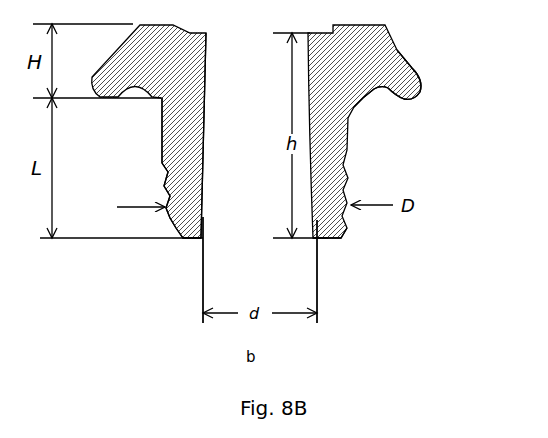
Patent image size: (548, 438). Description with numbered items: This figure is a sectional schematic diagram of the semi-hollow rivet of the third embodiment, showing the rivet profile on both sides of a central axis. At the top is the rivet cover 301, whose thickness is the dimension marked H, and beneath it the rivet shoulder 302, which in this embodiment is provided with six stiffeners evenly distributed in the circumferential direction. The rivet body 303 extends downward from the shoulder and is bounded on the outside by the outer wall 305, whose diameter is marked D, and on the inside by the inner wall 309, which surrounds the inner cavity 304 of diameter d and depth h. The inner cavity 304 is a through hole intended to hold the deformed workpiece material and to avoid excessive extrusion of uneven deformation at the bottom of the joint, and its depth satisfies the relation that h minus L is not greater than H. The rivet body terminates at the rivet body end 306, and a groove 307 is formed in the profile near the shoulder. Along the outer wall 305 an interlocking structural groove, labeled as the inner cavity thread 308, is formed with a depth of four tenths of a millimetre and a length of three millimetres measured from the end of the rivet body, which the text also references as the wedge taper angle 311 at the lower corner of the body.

The rivet cover 301 is at (138, 33).
The rivet shoulder 302 is at (407, 76).
The rivet body 303 is at (348, 138).
The inner cavity 304 is at (248, 200).
The outer wall 305 is at (159, 135).
The rivet body end 306 is at (336, 228).
The groove 307 is at (373, 90).
The inner cavity thread 308 is at (166, 176).
The inner wall 309 is at (206, 167).
The wedge taper angle 311 is at (200, 240).